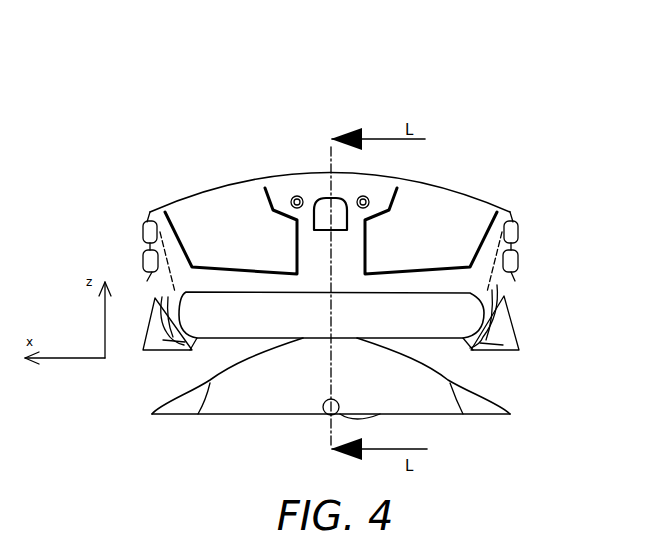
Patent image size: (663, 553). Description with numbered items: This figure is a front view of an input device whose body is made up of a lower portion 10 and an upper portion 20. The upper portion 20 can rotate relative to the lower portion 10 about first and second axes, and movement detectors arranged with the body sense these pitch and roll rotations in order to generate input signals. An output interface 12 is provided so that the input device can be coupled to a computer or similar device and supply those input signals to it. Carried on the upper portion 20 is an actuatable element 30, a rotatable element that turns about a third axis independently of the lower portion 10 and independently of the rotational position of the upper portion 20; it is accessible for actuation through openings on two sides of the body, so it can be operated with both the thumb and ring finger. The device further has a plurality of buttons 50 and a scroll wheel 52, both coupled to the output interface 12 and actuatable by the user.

The lower portion 10 is at (393, 378).
The output interface 12 is at (269, 427).
The upper portion 20 is at (331, 191).
The actuatable element 30 is at (392, 312).
The buttons 50 is at (622, 242).
The scroll wheel 52 is at (277, 128).